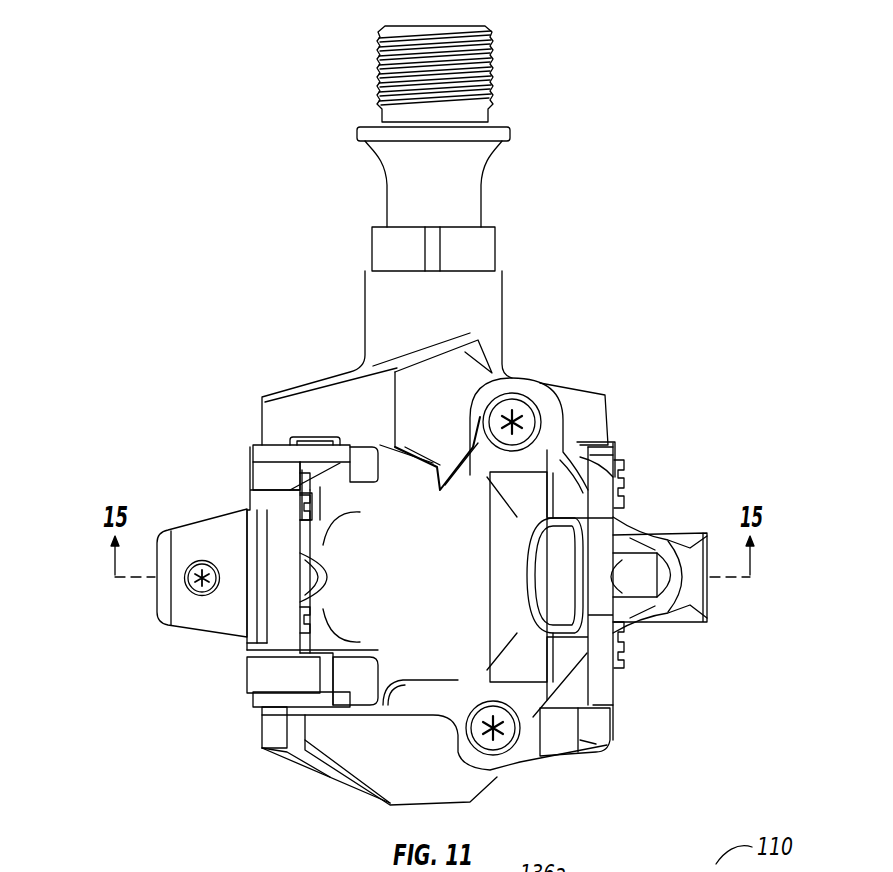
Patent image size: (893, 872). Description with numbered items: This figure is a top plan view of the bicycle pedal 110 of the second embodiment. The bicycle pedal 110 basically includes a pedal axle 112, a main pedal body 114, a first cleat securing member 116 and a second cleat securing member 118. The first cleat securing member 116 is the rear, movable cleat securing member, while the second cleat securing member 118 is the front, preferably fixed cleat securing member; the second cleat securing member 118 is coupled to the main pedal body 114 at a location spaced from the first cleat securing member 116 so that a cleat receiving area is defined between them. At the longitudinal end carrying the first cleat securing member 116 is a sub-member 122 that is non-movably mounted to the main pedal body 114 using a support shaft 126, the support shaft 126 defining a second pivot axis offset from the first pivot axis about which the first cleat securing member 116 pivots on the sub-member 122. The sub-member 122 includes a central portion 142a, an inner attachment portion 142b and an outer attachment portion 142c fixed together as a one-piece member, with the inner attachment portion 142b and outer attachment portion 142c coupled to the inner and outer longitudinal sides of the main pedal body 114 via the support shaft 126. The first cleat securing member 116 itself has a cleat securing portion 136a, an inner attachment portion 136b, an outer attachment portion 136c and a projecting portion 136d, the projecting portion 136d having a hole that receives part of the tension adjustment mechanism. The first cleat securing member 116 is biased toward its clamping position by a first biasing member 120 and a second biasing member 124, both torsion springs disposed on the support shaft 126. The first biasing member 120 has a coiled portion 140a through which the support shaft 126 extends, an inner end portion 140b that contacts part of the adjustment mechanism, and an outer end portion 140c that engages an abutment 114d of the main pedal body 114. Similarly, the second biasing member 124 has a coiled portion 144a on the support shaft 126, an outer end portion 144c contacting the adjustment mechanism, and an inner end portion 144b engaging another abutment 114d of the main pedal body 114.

The bicycle pedal 110 is at (668, 320).
The pedal axle 112 is at (494, 147).
The main pedal body 114 is at (337, 775).
The abutment 114d is at (355, 490).
The first cleat securing member 116 is at (243, 508).
The second cleat securing member 118 is at (592, 490).
The first biasing member 120 is at (312, 622).
The sub-member 122 is at (617, 712).
The second biasing member 124 is at (312, 531).
The support shaft 126 is at (288, 573).
The cleat securing portion 136a is at (273, 680).
The inner attachment portion 136b is at (268, 478).
The outer attachment portion 136c is at (277, 698).
The projecting portion 136d is at (185, 620).
The coiled portion 140a is at (300, 640).
The inner end portion 140b is at (650, 608).
The outer end portion 140c is at (334, 753).
The central portion 142a is at (600, 577).
The inner attachment portion 142b is at (307, 457).
The outer attachment portion 142c is at (263, 715).
The coiled portion 144a is at (303, 510).
The inner end portion 144b is at (303, 475).
The outer end portion 144c is at (647, 547).